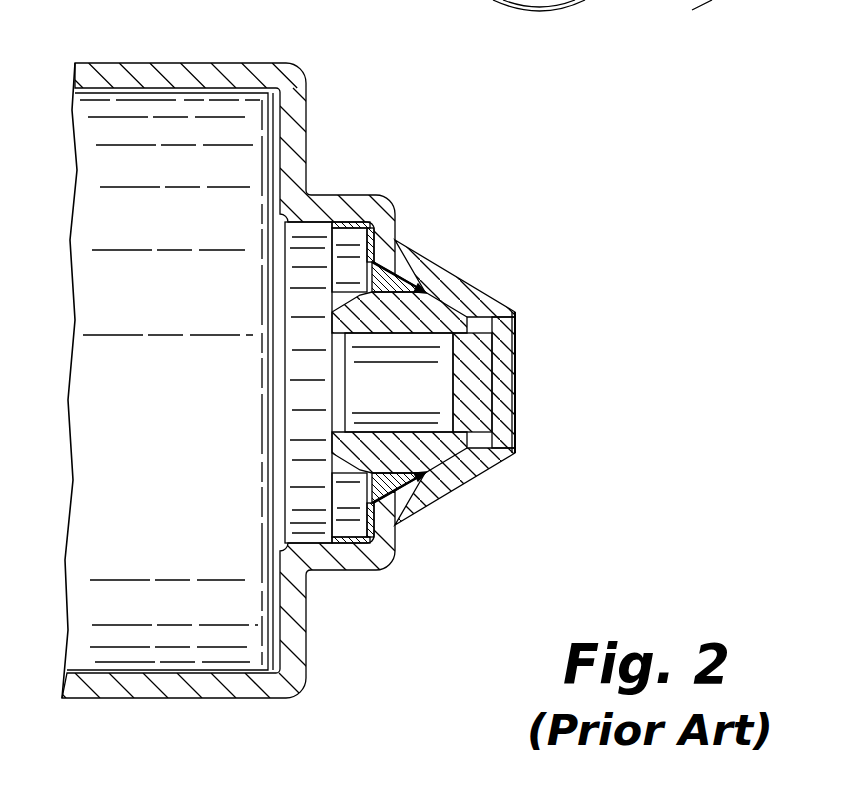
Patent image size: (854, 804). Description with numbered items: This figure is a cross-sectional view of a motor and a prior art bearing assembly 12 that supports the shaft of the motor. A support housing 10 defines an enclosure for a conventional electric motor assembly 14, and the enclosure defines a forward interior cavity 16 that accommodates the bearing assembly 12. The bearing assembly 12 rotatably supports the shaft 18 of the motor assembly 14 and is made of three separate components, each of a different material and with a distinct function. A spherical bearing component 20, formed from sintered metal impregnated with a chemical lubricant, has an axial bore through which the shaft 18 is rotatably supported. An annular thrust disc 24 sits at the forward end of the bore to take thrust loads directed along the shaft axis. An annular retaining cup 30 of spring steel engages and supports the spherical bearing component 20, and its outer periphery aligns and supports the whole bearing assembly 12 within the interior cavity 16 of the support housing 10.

The support housing 10 is at (121, 72).
The bearing assembly 12 is at (384, 283).
The electric motor assembly 14 is at (305, 282).
The forward interior cavity 16 is at (385, 482).
The shaft 18 is at (407, 373).
The spherical bearing component 20 is at (442, 445).
The annular thrust disc 24 is at (474, 385).
The annular retaining cup 30 is at (341, 543).